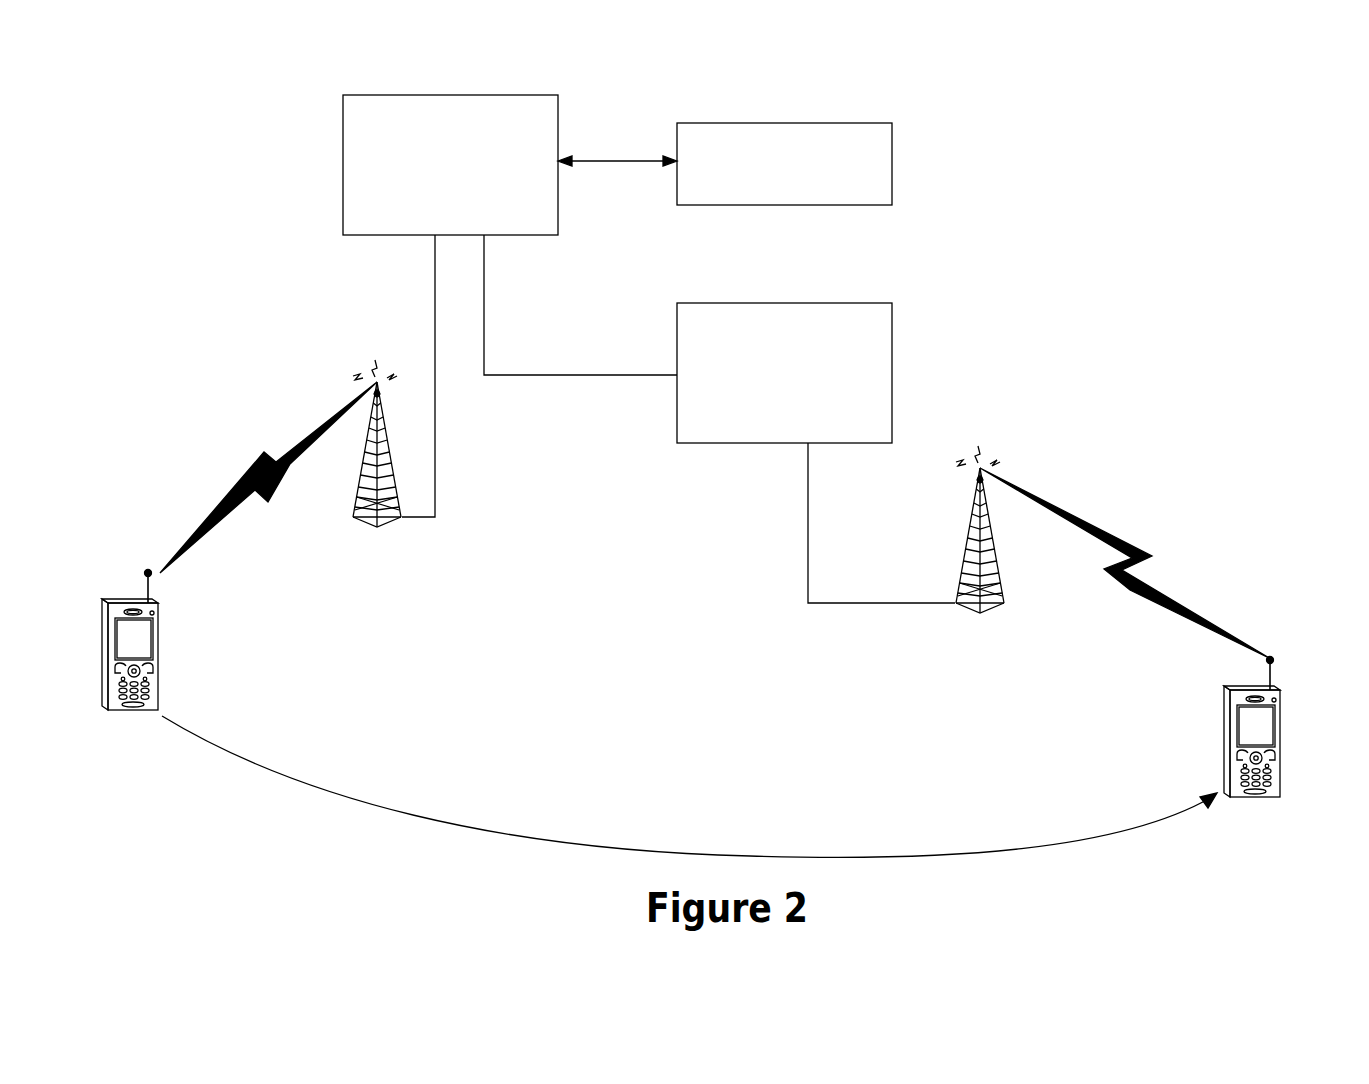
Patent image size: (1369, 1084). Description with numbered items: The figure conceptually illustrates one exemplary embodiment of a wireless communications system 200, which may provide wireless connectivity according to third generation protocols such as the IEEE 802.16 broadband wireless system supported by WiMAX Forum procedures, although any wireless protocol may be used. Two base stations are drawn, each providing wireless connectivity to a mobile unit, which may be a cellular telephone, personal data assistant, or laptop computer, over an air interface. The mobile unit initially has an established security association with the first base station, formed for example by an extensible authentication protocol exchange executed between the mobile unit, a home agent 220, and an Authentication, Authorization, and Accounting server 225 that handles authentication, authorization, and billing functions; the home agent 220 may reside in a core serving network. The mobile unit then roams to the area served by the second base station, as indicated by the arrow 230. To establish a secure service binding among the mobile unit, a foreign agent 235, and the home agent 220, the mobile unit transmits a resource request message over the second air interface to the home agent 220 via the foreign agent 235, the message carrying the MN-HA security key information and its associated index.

The wireless communications system 200 is at (1184, 117).
The home agent 220 is at (419, 198).
The Authentication, Authorization, and Accounting server 225 is at (814, 171).
The arrow 230 is at (754, 853).
The foreign agent 235 is at (759, 410).